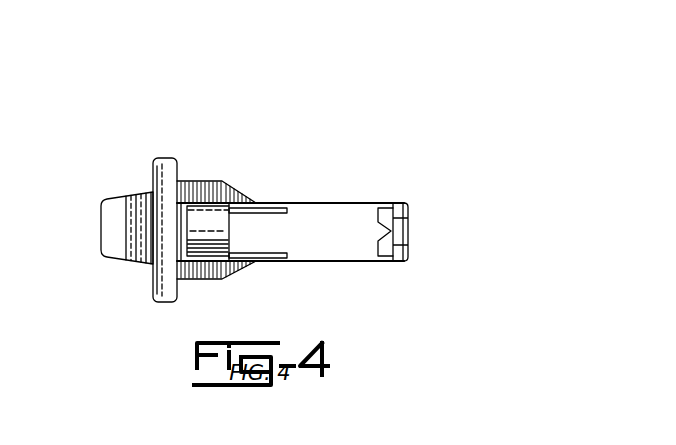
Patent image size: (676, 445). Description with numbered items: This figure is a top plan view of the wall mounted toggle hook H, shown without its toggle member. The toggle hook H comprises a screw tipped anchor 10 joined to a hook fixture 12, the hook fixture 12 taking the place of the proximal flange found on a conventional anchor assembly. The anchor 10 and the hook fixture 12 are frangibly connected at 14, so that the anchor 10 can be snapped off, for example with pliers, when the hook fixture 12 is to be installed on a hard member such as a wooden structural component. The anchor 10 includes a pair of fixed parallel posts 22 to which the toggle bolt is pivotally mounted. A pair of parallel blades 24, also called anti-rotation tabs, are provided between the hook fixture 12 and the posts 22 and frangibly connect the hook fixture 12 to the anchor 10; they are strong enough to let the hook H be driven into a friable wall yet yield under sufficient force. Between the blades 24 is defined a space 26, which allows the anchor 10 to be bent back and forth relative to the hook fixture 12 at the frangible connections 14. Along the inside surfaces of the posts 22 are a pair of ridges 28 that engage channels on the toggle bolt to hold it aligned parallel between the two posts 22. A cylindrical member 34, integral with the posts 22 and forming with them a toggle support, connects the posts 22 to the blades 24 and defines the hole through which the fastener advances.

The screw tipped anchor 10 is at (285, 193).
The hook fixture 12 is at (131, 196).
The frangible connection 14 is at (182, 175).
The fixed parallel posts 22 is at (342, 202).
The parallel blades 24 is at (210, 182).
The space 26 is at (180, 247).
The ridges 28 is at (251, 249).
The cylindrical member 34 is at (233, 258).
The wall mounted toggle hook H is at (340, 156).